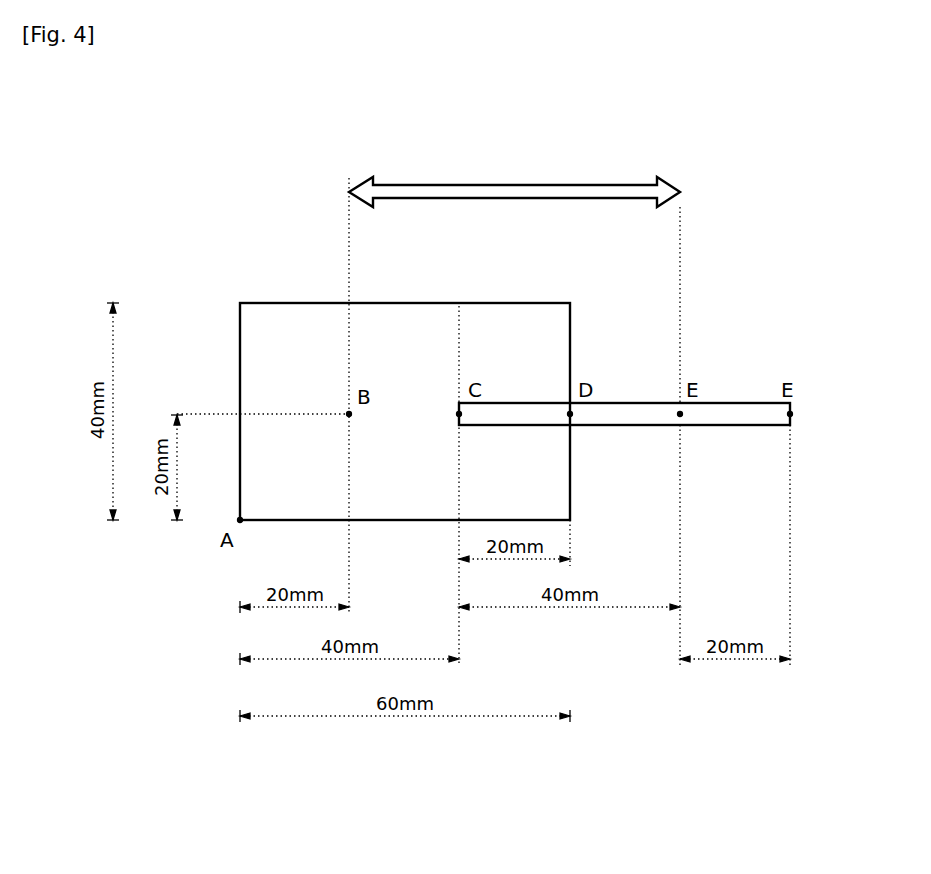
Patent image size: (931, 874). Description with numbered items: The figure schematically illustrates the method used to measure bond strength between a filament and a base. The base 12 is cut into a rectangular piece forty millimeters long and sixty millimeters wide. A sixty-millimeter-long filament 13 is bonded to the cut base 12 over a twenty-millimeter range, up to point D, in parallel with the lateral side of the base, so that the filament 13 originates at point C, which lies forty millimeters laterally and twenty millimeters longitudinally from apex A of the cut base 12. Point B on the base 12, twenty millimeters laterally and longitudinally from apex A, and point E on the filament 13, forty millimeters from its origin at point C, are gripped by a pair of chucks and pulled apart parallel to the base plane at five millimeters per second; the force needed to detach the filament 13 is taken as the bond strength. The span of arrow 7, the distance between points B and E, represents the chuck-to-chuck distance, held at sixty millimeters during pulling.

The arrow 7 is at (542, 161).
The base 12 is at (609, 322).
The filament 13 is at (748, 374).